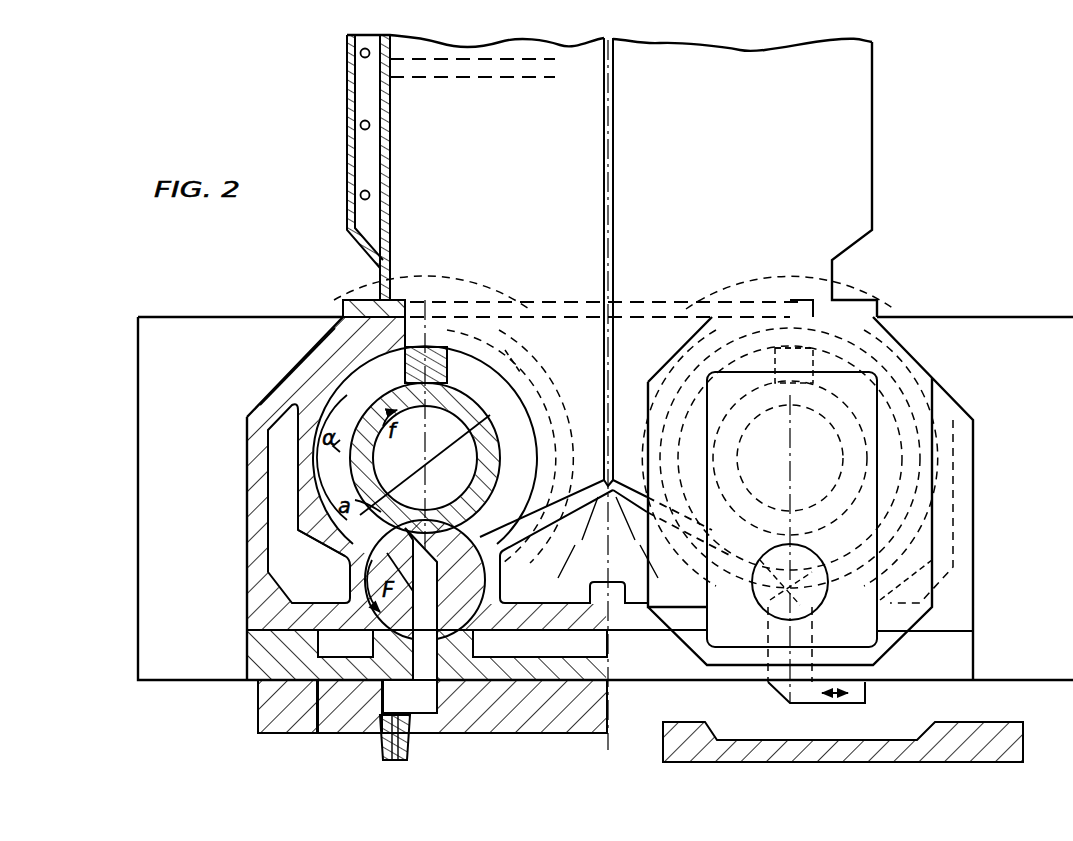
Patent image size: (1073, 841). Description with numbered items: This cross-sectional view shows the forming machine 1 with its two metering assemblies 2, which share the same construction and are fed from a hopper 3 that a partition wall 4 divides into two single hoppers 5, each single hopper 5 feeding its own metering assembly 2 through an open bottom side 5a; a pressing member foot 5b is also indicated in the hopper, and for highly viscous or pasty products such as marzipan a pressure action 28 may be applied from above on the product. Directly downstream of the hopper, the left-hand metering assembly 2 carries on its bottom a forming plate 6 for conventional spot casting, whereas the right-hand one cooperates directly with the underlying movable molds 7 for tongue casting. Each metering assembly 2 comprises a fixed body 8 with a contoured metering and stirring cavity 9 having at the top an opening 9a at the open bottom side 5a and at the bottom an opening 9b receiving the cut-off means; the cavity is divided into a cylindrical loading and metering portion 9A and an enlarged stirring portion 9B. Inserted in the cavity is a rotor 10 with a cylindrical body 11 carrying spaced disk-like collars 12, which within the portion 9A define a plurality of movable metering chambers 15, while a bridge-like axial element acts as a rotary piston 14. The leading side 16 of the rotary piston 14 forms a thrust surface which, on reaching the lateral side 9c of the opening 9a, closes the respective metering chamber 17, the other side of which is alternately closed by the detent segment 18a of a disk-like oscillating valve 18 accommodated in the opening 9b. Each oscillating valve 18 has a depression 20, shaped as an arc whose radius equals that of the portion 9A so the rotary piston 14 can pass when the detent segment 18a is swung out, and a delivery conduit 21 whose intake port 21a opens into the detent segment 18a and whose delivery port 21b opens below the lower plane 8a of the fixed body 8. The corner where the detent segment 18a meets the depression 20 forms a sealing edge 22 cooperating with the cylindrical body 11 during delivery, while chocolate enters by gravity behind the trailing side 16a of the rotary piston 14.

The forming machine 1 is at (922, 256).
The metering assembly 2 is at (292, 456).
The hopper 3 is at (843, 190).
The partition wall 4 is at (613, 186).
The single hopper 5 is at (500, 142).
The open bottom side 5a is at (493, 317).
The pressing member foot 5b is at (800, 300).
The forming plate 6 is at (582, 717).
The movable molds 7 is at (1010, 732).
The fixed body 8 is at (313, 345).
The lower plane 8a is at (247, 640).
The metering and stirring cavity 9 is at (570, 384).
The opening 9a is at (546, 317).
The cylindrical loading and metering portion 9A is at (412, 472).
The stirring portion 9B is at (592, 452).
The opening 9b is at (498, 576).
The lateral side 9c is at (415, 317).
The rotor 10 is at (490, 438).
The cylindrical body 11 is at (468, 420).
The collars 12 is at (497, 358).
The rotary piston 14 is at (446, 376).
The metering chambers 15 is at (318, 510).
The leading side 16 is at (405, 362).
The trailing side 16a is at (440, 357).
The metering chamber 17 is at (357, 390).
The oscillating valve 18 is at (352, 582).
The detent segment 18a is at (345, 558).
The depression 20 is at (594, 580).
The delivery conduit 21 is at (373, 646).
The intake port 21a is at (622, 644).
The delivery port 21b is at (540, 644).
The sealing edge 22 is at (607, 501).
The pressure action 28 is at (548, 74).